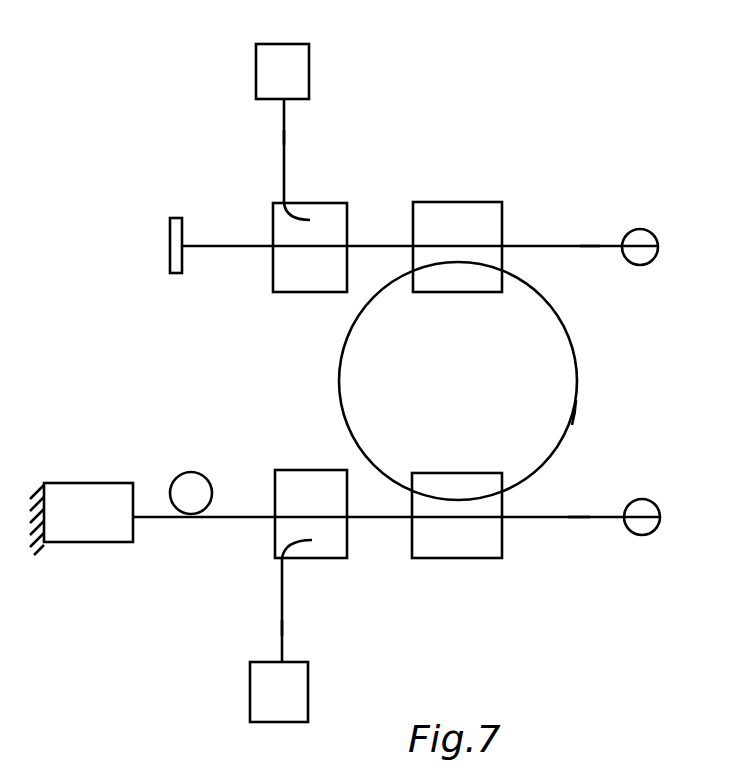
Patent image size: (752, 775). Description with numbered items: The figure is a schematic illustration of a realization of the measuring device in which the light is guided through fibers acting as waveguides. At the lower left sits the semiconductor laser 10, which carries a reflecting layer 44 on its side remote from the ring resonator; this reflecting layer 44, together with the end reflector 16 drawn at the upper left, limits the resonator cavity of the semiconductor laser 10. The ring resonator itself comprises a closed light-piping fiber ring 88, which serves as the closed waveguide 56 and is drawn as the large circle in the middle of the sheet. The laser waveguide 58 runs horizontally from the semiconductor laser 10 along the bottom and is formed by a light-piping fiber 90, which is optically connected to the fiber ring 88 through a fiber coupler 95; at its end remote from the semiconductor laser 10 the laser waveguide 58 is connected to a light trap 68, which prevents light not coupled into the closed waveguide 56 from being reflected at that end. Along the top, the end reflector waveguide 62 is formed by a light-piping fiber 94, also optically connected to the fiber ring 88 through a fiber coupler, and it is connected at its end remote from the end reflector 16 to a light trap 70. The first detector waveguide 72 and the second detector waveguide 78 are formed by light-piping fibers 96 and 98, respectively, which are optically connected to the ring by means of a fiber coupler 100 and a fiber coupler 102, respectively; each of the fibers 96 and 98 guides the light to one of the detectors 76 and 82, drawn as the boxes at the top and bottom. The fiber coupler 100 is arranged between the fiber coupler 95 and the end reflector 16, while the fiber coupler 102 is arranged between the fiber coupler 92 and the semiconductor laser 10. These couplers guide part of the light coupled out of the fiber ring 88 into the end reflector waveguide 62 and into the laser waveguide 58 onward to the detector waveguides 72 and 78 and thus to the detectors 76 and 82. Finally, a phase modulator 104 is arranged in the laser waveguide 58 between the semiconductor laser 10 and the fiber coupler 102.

The semiconductor laser 10 is at (92, 527).
The end reflector 16 is at (170, 262).
The reflecting layer 44 is at (35, 543).
The closed waveguide 56 is at (575, 350).
The laser waveguide 58 is at (543, 523).
The end reflector waveguide 62 is at (533, 242).
The light trap 68 is at (647, 510).
The light trap 70 is at (647, 233).
The first detector waveguide 72 is at (302, 142).
The detector 76 is at (297, 77).
The second detector waveguide 78 is at (282, 602).
The detector 82 is at (287, 700).
The closed light-piping fiber ring 88 is at (577, 412).
The light-piping fiber 90 is at (578, 517).
The fiber coupler 92 is at (470, 540).
The light-piping fiber 94 is at (590, 247).
The fiber coupler 95 is at (457, 227).
The light-piping fiber 96 is at (284, 137).
The light-piping fiber 98 is at (282, 628).
The fiber coupler 100 is at (292, 270).
The fiber coupler 102 is at (293, 487).
The phase modulator 104 is at (183, 498).